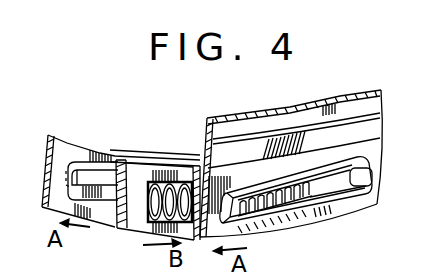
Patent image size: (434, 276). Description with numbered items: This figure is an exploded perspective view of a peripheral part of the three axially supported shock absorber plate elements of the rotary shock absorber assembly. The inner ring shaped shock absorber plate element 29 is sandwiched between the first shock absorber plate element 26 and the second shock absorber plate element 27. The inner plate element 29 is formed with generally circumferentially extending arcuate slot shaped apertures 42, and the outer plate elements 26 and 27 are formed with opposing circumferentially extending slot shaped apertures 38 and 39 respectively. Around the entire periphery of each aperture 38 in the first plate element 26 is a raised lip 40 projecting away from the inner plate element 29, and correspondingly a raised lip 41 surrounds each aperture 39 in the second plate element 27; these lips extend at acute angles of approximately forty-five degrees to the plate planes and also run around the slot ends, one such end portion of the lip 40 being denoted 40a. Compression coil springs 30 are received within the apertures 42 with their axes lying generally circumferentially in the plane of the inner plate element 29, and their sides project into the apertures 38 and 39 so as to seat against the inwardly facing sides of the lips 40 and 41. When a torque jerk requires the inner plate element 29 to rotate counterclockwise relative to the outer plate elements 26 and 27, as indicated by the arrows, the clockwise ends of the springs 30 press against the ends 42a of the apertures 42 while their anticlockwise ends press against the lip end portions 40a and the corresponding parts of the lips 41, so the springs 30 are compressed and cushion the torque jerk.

The first shock absorber plate element 26 is at (361, 205).
The second shock absorber plate element 27 is at (50, 180).
The inner shock absorber plate element 29 is at (143, 233).
The compression coil spring 30 is at (182, 187).
The slot shaped aperture 38 is at (337, 190).
The slot shaped aperture 39 is at (107, 186).
The raised lip 40 is at (292, 217).
The end portion of the raised lip 40a is at (369, 175).
The raised lip 41 is at (93, 171).
The slot shaped aperture 42 is at (160, 183).
The end of the slot shaped aperture 42a is at (147, 203).